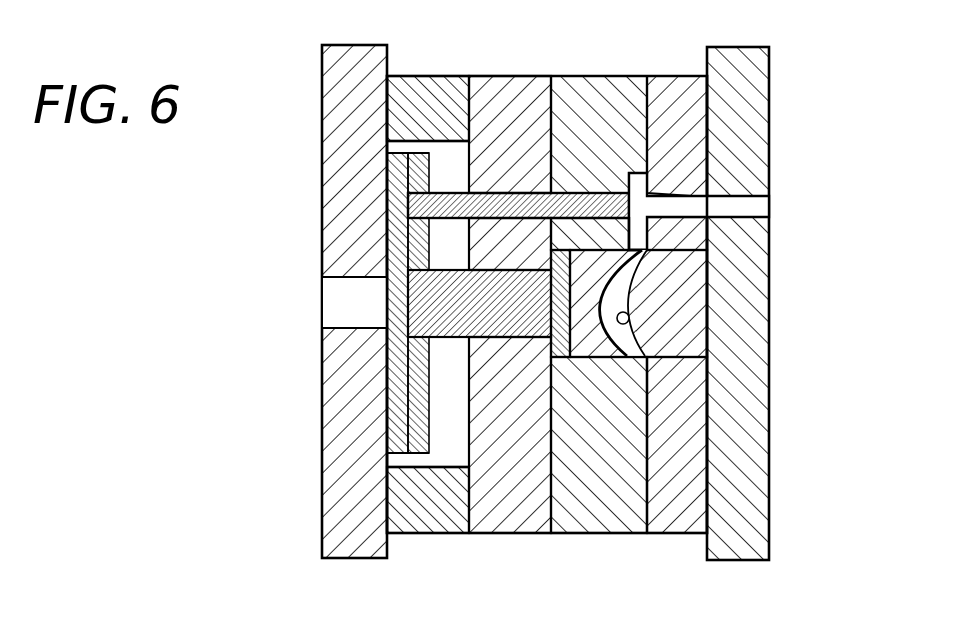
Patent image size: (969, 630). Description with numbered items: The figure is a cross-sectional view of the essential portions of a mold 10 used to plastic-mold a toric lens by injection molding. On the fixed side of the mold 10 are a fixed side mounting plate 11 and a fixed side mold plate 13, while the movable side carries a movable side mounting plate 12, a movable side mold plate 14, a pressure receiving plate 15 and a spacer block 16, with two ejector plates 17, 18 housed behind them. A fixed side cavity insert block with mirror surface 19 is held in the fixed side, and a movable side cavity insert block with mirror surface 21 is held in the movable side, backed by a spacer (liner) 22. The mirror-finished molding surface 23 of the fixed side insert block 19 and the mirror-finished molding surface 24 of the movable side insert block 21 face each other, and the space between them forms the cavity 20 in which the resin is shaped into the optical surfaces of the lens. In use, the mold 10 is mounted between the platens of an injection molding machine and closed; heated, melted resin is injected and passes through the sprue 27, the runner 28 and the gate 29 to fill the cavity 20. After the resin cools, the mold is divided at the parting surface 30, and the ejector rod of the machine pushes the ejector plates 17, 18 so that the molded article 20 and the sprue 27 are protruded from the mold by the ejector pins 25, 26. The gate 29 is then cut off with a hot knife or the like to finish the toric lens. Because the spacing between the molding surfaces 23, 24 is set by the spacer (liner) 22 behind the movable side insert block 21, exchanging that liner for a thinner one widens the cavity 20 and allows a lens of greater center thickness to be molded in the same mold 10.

The mold 10 is at (695, 44).
The fixed side mounting plate 11 is at (752, 60).
The movable side mounting plate 12 is at (342, 65).
The fixed side mold plate 13 is at (668, 89).
The movable side mold plate 14 is at (598, 89).
The pressure receiving plate 15 is at (520, 93).
The spacer block 16 is at (425, 86).
The ejector plate 17 is at (393, 473).
The ejector plate 18 is at (417, 457).
The fixed side cavity insert block with mirror surface 19 is at (698, 315).
The cavity 20 is at (617, 295).
The movable side cavity insert block with mirror surface 21 is at (603, 265).
The spacer (liner) 22 is at (560, 358).
The molding surface 23 is at (640, 325).
The molding surface 24 is at (690, 343).
The ejector pin 25 is at (450, 342).
The ejector pin 26 is at (448, 200).
The sprue 27 is at (683, 203).
The runner 28 is at (690, 213).
The gate 29 is at (637, 230).
The parting surface 30 is at (648, 540).